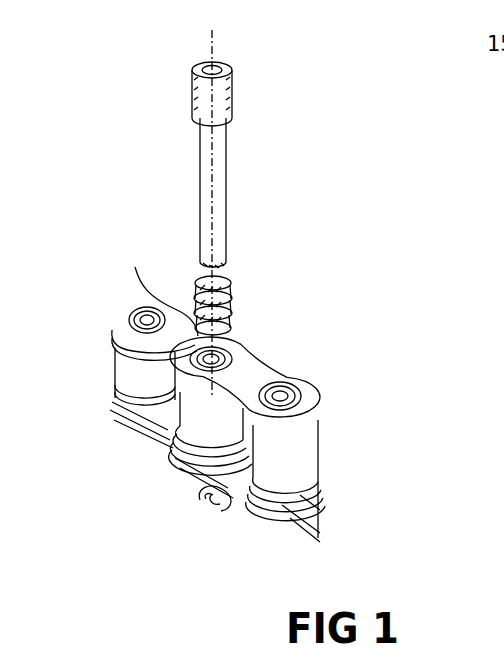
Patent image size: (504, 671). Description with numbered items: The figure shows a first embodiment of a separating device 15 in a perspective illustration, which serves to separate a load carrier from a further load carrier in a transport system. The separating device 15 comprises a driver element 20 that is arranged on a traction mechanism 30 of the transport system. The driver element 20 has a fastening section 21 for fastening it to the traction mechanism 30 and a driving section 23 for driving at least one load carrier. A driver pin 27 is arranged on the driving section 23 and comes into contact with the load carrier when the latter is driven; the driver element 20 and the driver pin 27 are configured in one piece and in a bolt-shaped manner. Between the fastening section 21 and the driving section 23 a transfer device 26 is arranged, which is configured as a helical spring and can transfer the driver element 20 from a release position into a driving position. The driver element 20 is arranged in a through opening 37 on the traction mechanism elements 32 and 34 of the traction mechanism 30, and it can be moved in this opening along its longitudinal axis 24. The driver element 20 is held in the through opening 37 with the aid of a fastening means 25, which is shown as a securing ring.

The separating device 15 is at (132, 105).
The driver element 20 is at (214, 164).
The fastening section 21 is at (246, 210).
The driving section 23 is at (246, 60).
The longitudinal axis 24 is at (210, 47).
The fastening means 25 is at (190, 493).
The transfer device 26 is at (237, 313).
The driver pin 27 is at (222, 114).
The traction mechanism 30 is at (254, 388).
The traction mechanism element 32 is at (280, 372).
The traction mechanism element 34 is at (195, 413).
The through opening 37 is at (208, 347).